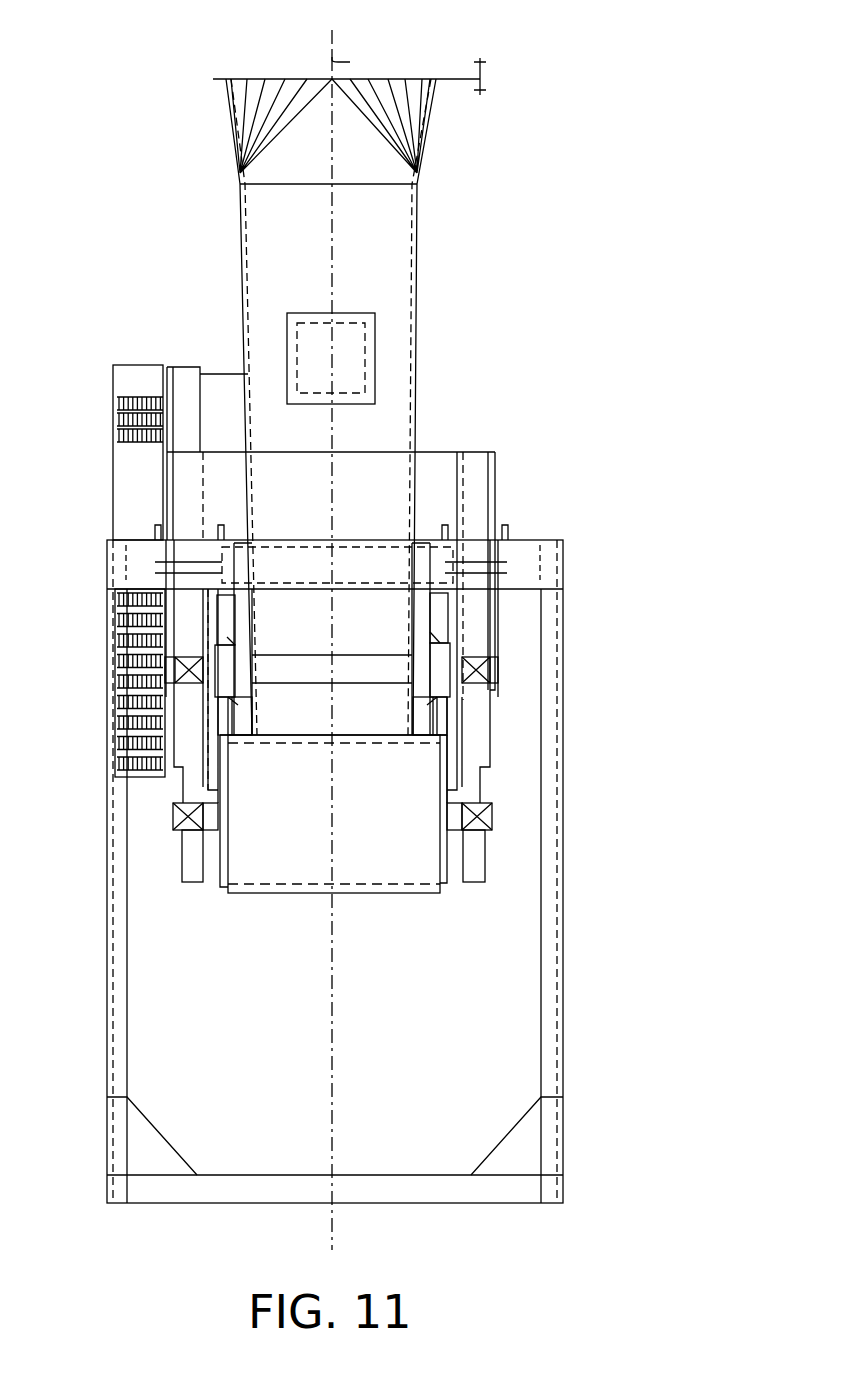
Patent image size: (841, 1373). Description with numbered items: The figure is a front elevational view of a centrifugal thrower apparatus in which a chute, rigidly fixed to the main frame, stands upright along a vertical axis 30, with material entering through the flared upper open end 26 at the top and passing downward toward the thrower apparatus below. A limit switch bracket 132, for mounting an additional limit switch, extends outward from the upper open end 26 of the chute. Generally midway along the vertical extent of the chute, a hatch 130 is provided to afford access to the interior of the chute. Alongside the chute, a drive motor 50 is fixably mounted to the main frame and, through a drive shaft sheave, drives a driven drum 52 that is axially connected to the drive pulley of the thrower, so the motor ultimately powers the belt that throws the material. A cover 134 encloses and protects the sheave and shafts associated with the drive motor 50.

The upper open end 26 is at (232, 79).
The vertical axis 30 is at (358, 65).
The limit switch bracket 132 is at (482, 80).
The hatch 130 is at (353, 378).
The cover 134 is at (145, 492).
The drive motor 50 is at (230, 387).
The driven drum 52 is at (118, 734).